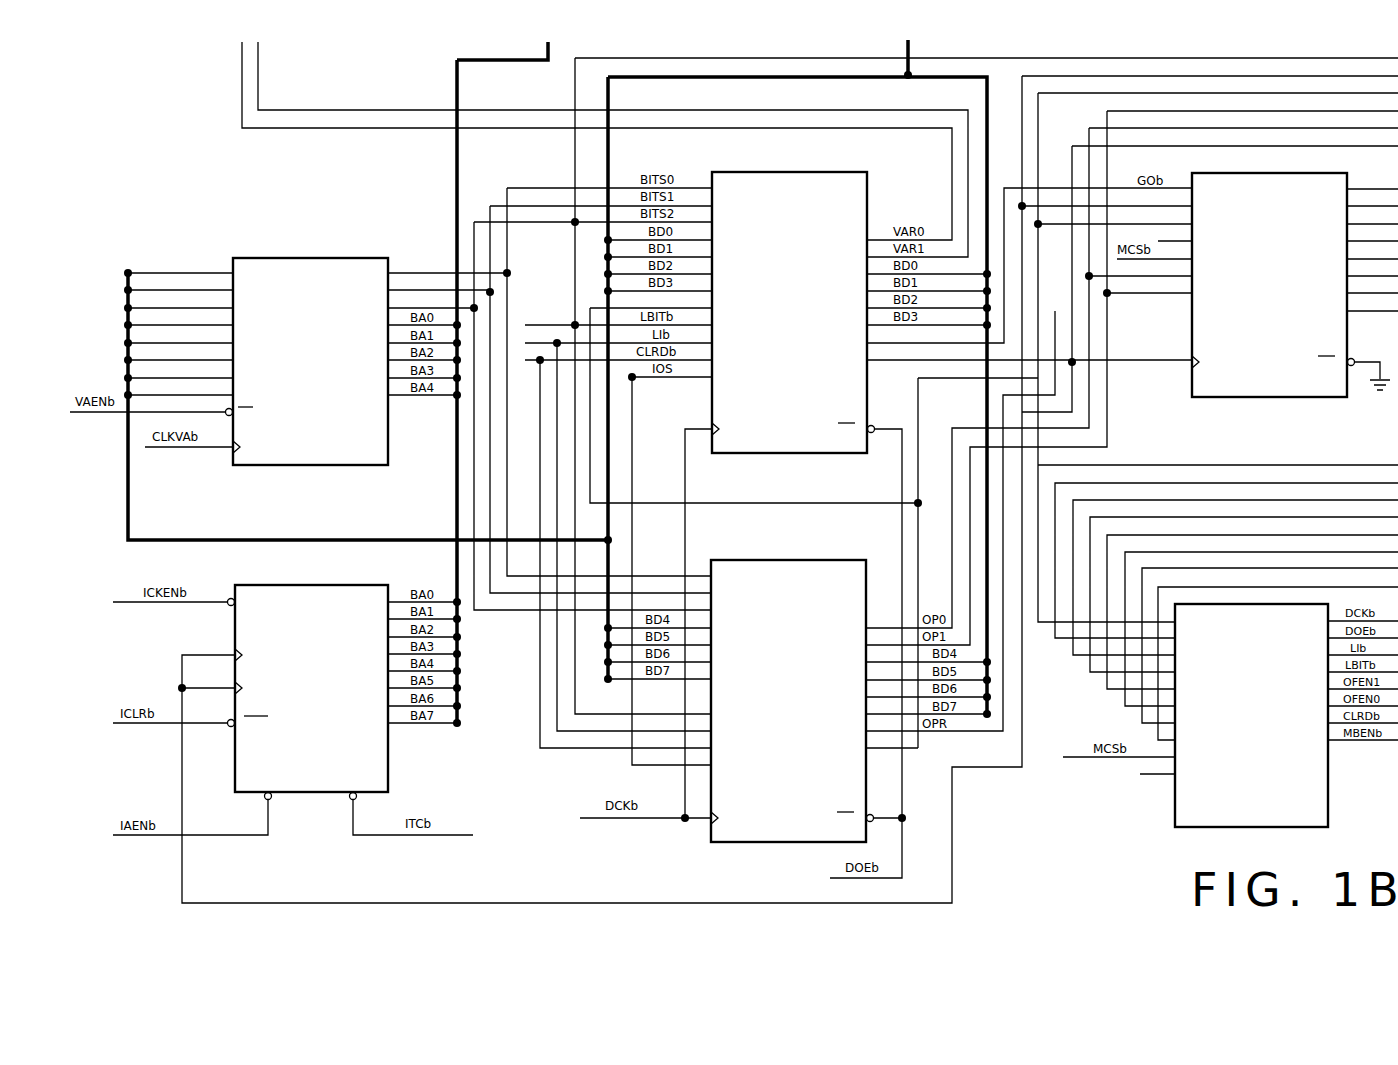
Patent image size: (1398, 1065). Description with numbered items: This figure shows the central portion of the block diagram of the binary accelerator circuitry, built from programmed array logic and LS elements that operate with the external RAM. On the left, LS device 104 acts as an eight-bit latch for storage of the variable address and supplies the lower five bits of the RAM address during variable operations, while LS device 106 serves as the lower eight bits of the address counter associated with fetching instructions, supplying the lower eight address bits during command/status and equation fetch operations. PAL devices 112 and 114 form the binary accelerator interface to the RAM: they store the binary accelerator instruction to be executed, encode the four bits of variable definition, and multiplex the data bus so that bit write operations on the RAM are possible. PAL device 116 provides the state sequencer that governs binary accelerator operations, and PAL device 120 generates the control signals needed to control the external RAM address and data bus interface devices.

The LS device 104 is at (332, 466).
The LS device 106 is at (305, 585).
The PAL device 112 is at (810, 172).
The PAL device 114 is at (735, 842).
The PAL device 116 is at (1240, 397).
The PAL device 120 is at (1195, 827).